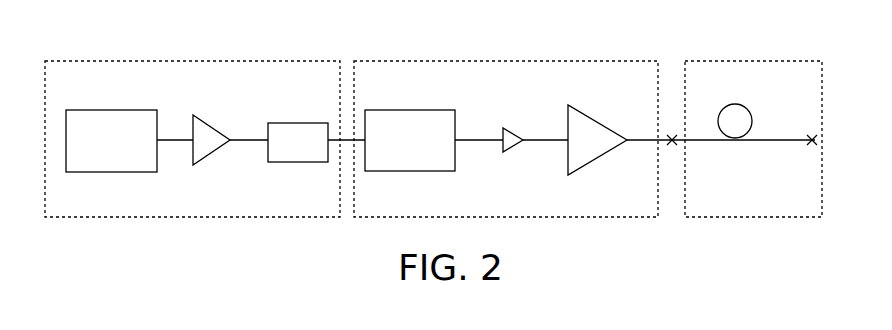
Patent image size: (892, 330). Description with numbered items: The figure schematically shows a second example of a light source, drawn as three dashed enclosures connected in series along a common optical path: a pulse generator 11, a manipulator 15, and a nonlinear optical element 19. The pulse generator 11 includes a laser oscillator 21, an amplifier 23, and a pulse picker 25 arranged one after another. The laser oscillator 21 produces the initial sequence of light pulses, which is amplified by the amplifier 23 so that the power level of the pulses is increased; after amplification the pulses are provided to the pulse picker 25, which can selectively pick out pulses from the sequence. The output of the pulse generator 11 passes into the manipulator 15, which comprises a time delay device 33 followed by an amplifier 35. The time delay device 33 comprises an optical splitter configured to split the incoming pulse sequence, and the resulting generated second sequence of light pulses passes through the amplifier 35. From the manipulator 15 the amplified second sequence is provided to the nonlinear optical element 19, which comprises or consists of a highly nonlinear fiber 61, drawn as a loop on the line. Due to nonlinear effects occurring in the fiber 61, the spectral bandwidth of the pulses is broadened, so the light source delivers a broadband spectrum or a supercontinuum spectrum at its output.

The pulse generator 11 is at (196, 62).
The manipulator 15 is at (515, 61).
The nonlinear optical element 19 is at (768, 61).
The laser oscillator 21 is at (130, 110).
The amplifier 23 is at (210, 128).
The pulse picker 25 is at (300, 123).
The time delay device 33 is at (418, 110).
The amplifier 35 is at (598, 122).
The highly nonlinear fiber 61 is at (751, 114).